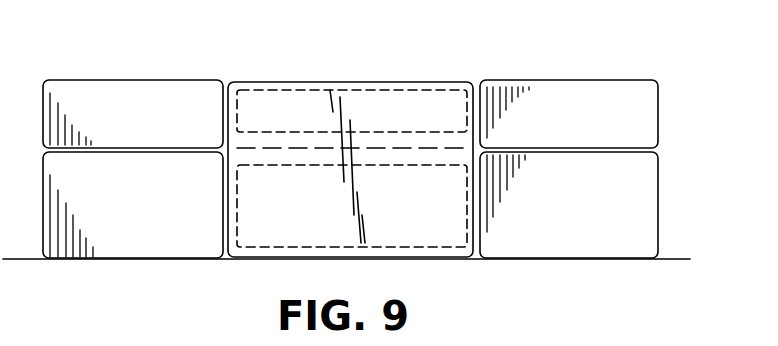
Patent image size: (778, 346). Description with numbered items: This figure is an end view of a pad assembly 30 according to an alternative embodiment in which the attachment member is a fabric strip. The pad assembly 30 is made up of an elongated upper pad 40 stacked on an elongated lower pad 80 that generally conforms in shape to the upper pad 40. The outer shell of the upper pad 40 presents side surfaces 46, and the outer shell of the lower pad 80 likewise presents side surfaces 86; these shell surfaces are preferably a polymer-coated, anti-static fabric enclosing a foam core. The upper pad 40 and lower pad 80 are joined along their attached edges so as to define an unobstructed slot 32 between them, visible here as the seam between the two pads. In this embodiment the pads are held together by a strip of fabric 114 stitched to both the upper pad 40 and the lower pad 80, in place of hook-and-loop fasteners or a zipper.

The pad assembly 30 is at (587, 68).
The slot 32 is at (656, 148).
The upper pad 40 is at (658, 100).
The side surfaces 46 is at (144, 99).
The lower pad 80 is at (659, 203).
The side surfaces 86 is at (151, 232).
The strip of fabric 114 is at (407, 103).